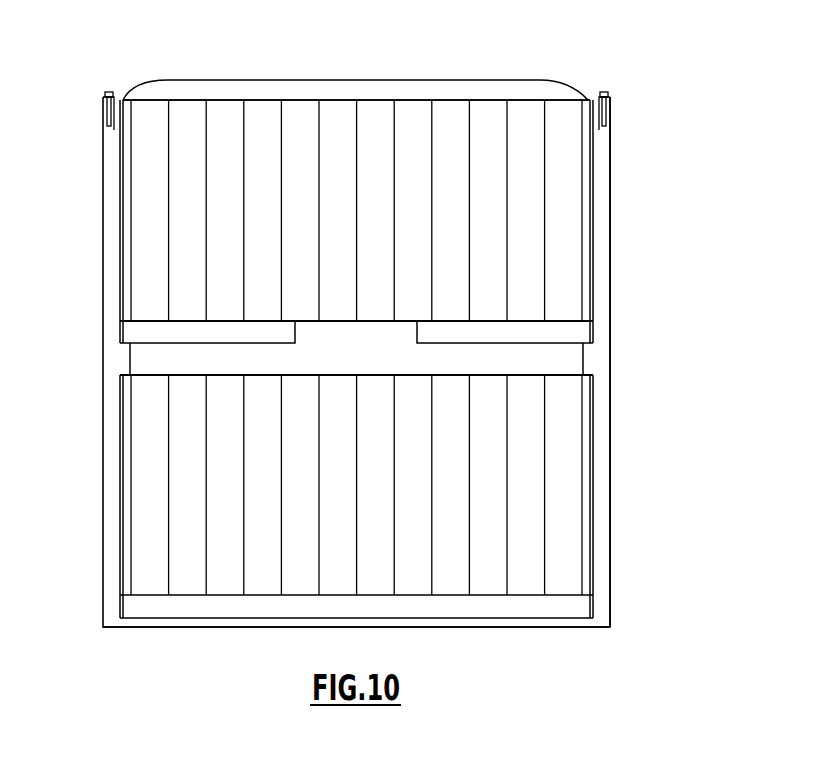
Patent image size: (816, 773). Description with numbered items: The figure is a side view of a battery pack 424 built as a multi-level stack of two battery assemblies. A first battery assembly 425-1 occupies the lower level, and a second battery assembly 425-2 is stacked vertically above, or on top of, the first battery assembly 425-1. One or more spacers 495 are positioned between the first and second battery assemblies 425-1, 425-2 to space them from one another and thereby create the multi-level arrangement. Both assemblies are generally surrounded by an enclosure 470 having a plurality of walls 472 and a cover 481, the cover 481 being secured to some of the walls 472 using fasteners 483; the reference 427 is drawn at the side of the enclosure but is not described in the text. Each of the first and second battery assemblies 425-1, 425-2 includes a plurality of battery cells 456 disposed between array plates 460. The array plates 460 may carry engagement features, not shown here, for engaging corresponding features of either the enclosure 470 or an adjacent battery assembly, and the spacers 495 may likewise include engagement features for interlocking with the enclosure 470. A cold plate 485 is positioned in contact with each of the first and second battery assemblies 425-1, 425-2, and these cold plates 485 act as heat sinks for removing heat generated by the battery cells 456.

The battery pack 424 is at (485, 66).
The first battery assembly 425-1 is at (482, 566).
The second battery assembly 425-2 is at (440, 142).
The side frame member 427 is at (610, 222).
The battery cells 456 is at (368, 110).
The array plates 460 is at (129, 100).
The enclosure 470 is at (610, 150).
The walls 472 is at (103, 501).
The cover 481 is at (237, 80).
The fasteners 483 is at (108, 92).
The cold plate 485 is at (345, 330).
The spacers 495 is at (123, 362).